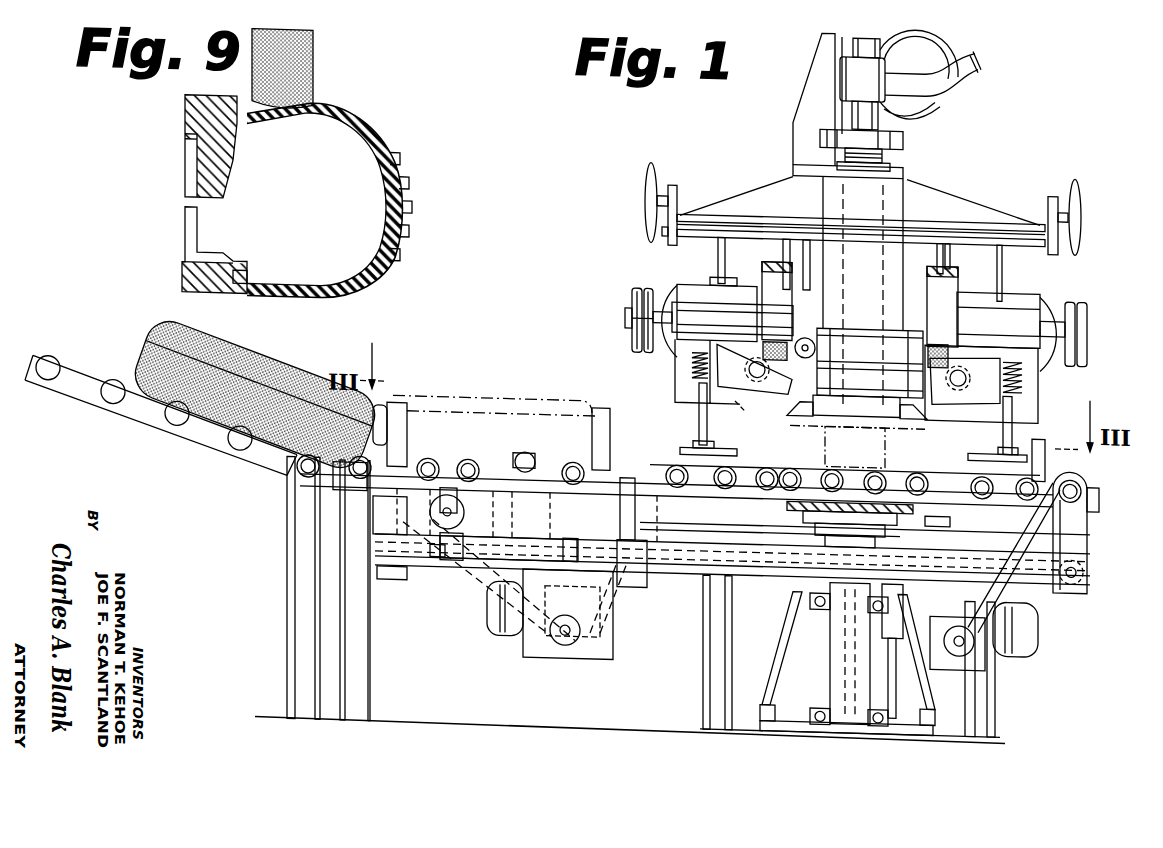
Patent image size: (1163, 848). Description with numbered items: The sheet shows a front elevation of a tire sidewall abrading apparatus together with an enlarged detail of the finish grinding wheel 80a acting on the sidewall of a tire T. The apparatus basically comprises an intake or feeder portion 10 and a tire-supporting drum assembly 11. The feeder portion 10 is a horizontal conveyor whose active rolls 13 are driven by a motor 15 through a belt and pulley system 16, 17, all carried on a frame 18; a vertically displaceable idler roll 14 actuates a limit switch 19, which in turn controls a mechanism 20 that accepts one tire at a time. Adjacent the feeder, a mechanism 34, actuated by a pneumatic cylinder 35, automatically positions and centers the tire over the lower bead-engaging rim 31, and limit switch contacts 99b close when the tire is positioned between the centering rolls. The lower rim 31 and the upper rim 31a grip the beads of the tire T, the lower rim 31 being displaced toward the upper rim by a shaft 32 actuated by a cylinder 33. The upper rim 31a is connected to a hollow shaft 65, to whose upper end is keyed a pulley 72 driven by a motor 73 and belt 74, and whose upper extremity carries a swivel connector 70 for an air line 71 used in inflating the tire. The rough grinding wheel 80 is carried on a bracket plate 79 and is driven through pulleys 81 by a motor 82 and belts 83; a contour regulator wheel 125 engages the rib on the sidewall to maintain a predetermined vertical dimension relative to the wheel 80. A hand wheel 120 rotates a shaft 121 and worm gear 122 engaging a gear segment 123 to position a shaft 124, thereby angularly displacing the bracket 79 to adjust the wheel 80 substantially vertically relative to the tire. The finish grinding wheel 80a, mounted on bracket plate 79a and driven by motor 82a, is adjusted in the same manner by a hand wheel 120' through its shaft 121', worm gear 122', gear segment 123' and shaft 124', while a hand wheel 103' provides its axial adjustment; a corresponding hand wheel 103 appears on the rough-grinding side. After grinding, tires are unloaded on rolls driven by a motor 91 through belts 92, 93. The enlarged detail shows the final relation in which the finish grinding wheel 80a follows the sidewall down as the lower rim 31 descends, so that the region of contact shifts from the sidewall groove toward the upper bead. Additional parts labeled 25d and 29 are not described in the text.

In FIG. 1, the feeder portion 10 is at (460, 594).
In FIG. 1, the drum assembly 11 is at (825, 463).
In FIG. 1, the active rolls 13 is at (435, 470).
In FIG. 1, the idler roll 14 is at (525, 455).
In FIG. 1, the motor 15 is at (512, 634).
In FIG. 1, the belt and pulley system 16 is at (489, 603).
In FIG. 1, the belt and pulley system 17 is at (443, 566).
In FIG. 1, the frame 18 is at (635, 590).
In FIG. 1, the limit switch 19 is at (540, 457).
In FIG. 1, the mechanism 20 is at (430, 392).
In FIG. 1, the limit switch 25d is at (415, 578).
In FIG. 1, the drive chain 29 is at (545, 572).
In FIG. 9, the lower bead-engaging rim 31 is at (185, 280).
In FIG. 1, the lower bead-engaging rim 31 is at (790, 505).
In FIG. 9, the upper rim 31a is at (232, 155).
In FIG. 1, the upper rim 31a is at (890, 448).
In FIG. 1, the shaft 32 is at (840, 583).
In FIG. 1, the cylinder 33 is at (845, 672).
In FIG. 1, the positioning and centering mechanism 34 is at (1092, 468).
In FIG. 1, the pneumatic cylinder 35 is at (1085, 568).
In FIG. 1, the hollow shaft 65 is at (880, 118).
In FIG. 1, the swivel connector 70 is at (838, 72).
In FIG. 1, the air line 71 is at (980, 56).
In FIG. 1, the pulley 72 is at (898, 156).
In FIG. 1, the motor 73 is at (905, 56).
In FIG. 1, the belt 74 is at (905, 132).
In FIG. 1, the bracket plate 79 is at (762, 268).
In FIG. 1, the bracket plate 79a is at (950, 242).
In FIG. 1, the rough grinding wheel 80 is at (790, 340).
In FIG. 9, the finish grinding wheel 80a is at (310, 55).
In FIG. 1, the finish grinding wheel 80a is at (960, 292).
In FIG. 1, the pulleys 81 is at (630, 300).
In FIG. 1, the motor 82 is at (666, 292).
In FIG. 1, the motor 82a is at (1055, 312).
In FIG. 1, the belts 83 is at (642, 290).
In FIG. 1, the motor 91 is at (1025, 640).
In FIG. 1, the belt 92 is at (958, 619).
In FIG. 1, the belt 93 is at (1044, 472).
In FIG. 1, the limit switch contacts 99b is at (950, 514).
In FIG. 1, the adjusting handwheel 103 is at (634, 203).
In FIG. 1, the hand wheel 103' is at (1090, 212).
In FIG. 1, the hand wheel 120 is at (723, 445).
In FIG. 1, the hand wheel 120' is at (1015, 451).
In FIG. 1, the shaft 121 is at (677, 414).
In FIG. 1, the shaft 121' is at (1039, 426).
In FIG. 1, the worm gear 122 is at (668, 365).
In FIG. 1, the worm gear 122' is at (1044, 379).
In FIG. 1, the gear segment 123 is at (754, 389).
In FIG. 1, the gear segment 123' is at (965, 405).
In FIG. 1, the shaft 124 is at (857, 373).
In FIG. 1, the shaft 124' is at (988, 329).
In FIG. 1, the contour regulator wheel 125 is at (815, 345).
In FIG. 9, the tire T is at (355, 118).
In FIG. 1, the tire T is at (250, 374).